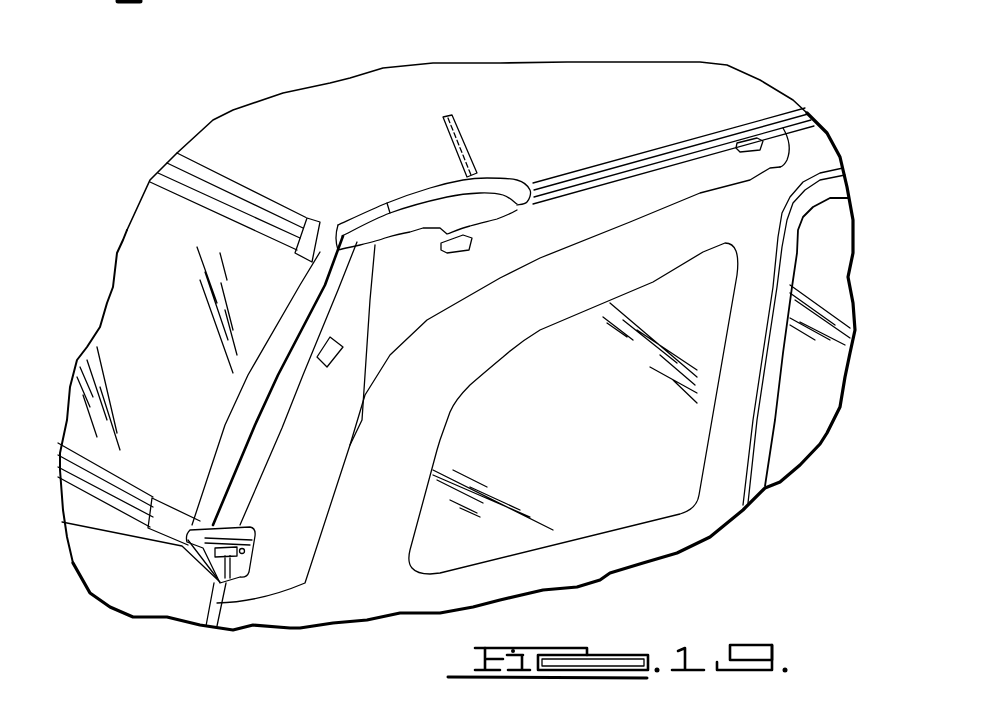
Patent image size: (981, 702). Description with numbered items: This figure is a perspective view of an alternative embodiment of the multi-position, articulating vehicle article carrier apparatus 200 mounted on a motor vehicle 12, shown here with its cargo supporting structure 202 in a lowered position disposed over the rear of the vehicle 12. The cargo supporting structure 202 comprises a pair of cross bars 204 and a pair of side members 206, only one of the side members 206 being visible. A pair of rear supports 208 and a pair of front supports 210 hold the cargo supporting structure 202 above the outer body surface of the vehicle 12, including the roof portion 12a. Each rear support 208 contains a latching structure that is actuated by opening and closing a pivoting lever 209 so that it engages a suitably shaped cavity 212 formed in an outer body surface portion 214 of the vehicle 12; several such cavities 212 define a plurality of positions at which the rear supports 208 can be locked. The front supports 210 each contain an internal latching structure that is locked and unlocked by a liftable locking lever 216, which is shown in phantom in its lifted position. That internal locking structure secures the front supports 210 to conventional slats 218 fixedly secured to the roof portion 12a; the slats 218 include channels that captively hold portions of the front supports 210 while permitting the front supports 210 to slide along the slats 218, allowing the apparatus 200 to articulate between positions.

The motor vehicle 12 is at (772, 77).
The roof portion 12a is at (594, 72).
The multi-position articulating vehicle article carrier apparatus 200 is at (205, 153).
The cargo supporting structure 202 is at (231, 404).
The cross bars 204 is at (240, 187).
The side members 206 is at (297, 308).
The rear supports 208 is at (201, 569).
The pivoting lever 209 is at (217, 626).
The front supports 210 is at (362, 208).
The cavity 212 is at (457, 252).
The outer body surface portion 214 is at (547, 232).
The liftable locking lever 216 is at (470, 147).
The slats 218 is at (677, 143).